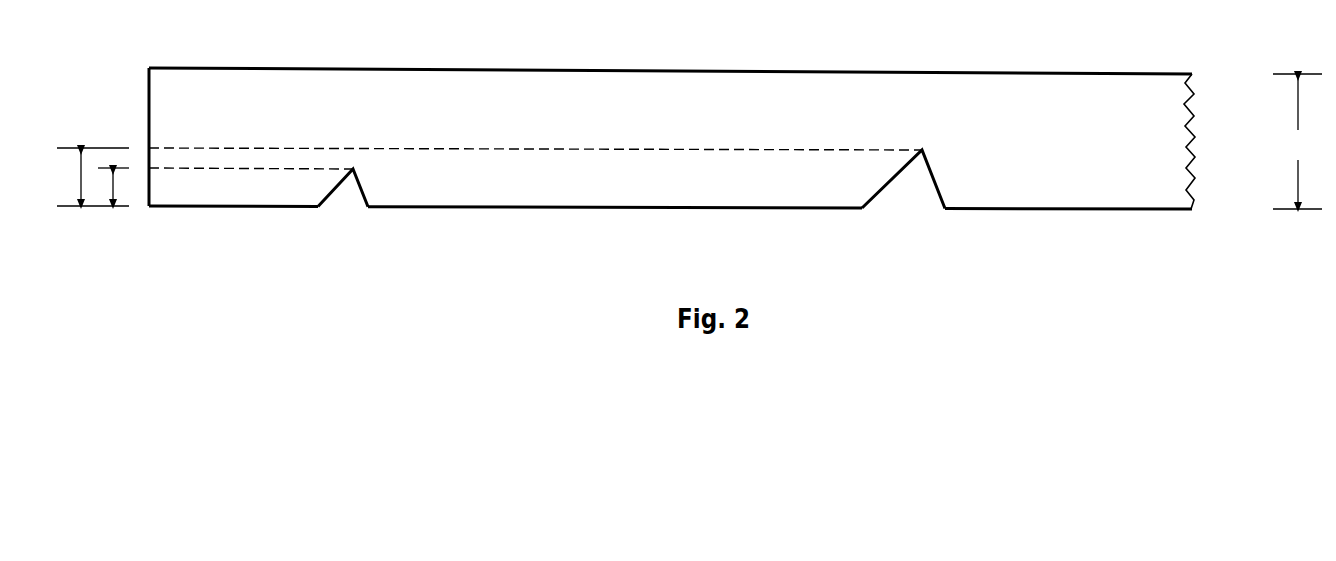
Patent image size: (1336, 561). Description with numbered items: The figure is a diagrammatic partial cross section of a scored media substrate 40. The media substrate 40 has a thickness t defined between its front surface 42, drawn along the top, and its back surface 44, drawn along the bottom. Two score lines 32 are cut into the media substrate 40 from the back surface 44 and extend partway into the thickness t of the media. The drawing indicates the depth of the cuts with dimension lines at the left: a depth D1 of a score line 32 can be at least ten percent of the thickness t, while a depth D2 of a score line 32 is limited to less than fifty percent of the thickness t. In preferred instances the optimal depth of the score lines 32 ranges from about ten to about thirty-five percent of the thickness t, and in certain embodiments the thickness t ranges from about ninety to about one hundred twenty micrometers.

The media substrate 40 is at (1168, 123).
The front surface 42 is at (788, 72).
The back surface 44 is at (1123, 209).
The score lines 32 is at (327, 195).
The depth of score lines D1 is at (115, 185).
The depth of a score line D2 is at (80, 173).
The thickness t is at (1297, 141).